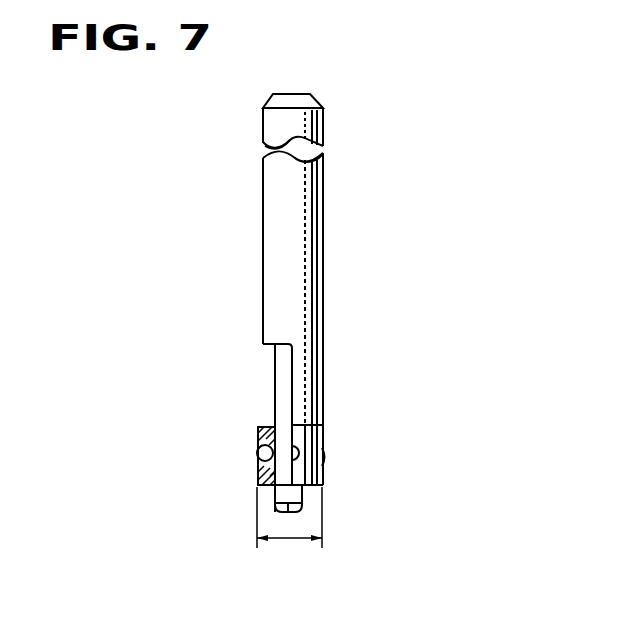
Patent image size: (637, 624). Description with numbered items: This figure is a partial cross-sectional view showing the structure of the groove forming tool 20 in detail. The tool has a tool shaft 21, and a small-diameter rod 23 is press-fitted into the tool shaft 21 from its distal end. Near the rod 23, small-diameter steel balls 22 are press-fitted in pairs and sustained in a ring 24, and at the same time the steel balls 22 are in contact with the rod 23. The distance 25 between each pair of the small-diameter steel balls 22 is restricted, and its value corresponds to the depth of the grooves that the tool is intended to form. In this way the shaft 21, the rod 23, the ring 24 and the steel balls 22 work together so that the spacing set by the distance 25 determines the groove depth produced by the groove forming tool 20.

The groove forming tool 20 is at (374, 335).
The tool shaft 21 is at (268, 255).
The small-diameter steel balls 22 is at (258, 448).
The small-diameter rod 23 is at (282, 353).
The ring 24 is at (260, 473).
The distance 25 is at (287, 540).